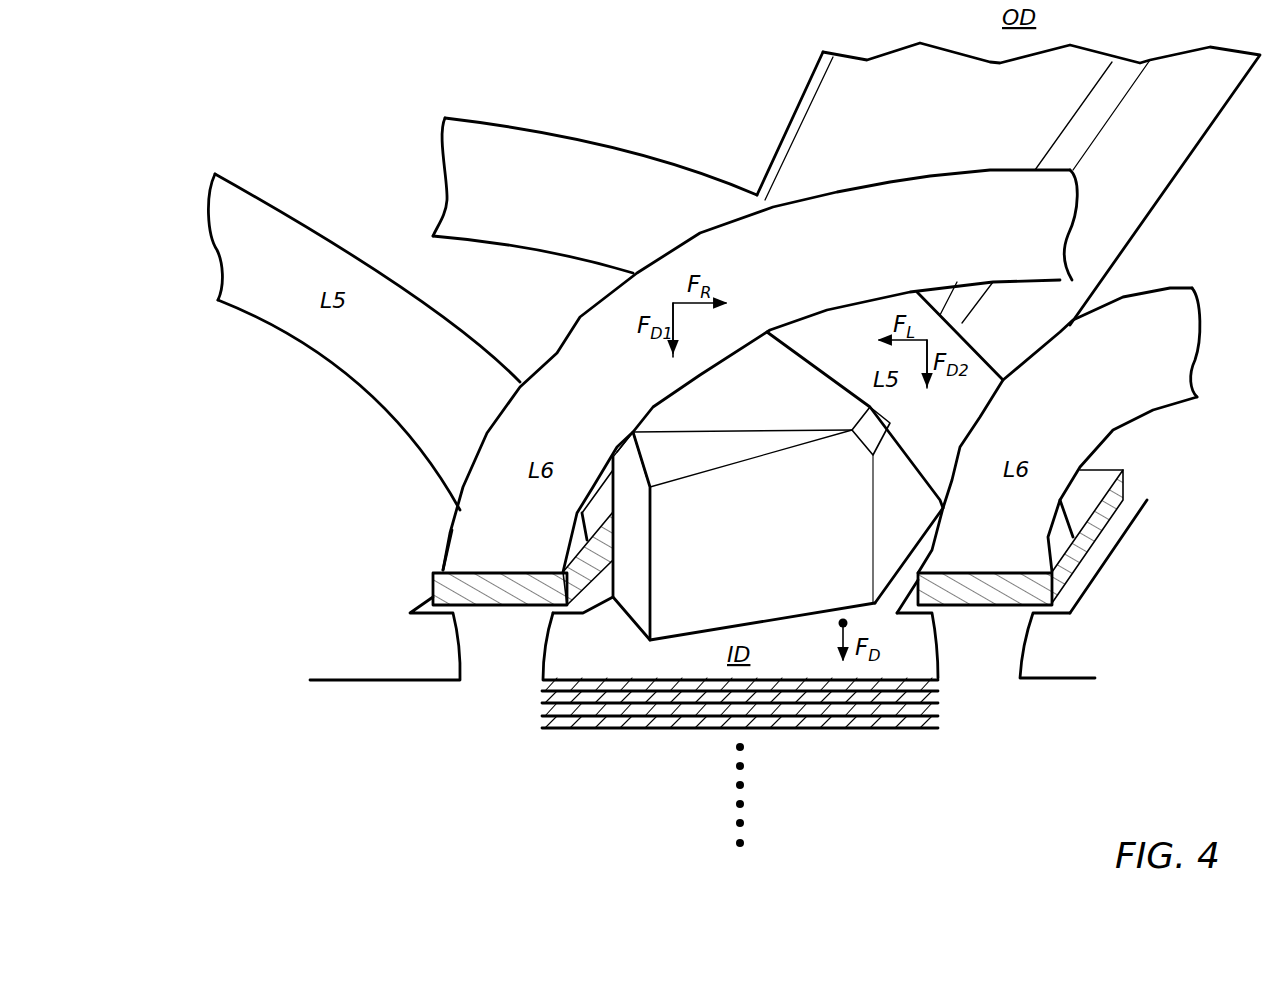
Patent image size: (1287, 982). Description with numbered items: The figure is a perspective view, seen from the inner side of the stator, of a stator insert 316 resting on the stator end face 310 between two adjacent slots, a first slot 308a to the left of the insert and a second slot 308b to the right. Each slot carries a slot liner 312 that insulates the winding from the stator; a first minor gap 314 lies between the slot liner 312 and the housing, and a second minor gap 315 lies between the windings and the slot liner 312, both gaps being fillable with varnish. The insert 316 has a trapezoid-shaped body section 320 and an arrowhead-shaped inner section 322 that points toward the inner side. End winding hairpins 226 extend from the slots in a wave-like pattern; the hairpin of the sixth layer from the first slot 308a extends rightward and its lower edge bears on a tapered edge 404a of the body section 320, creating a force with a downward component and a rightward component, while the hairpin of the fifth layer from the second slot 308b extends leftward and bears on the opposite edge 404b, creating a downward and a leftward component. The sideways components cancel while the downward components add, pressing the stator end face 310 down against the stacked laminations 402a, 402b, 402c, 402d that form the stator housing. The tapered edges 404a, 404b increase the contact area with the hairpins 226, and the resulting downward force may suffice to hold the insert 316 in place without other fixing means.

The end winding hairpins 226 is at (292, 230).
The first slot 308a is at (493, 640).
The second slot 308b is at (980, 657).
The stator end face 310 is at (743, 594).
The slot liner 312 is at (433, 573).
The first minor gap 314 is at (423, 610).
The second minor gap 315 is at (440, 560).
The stator insert 316 is at (797, 390).
The trapezoid-shaped body section 320 is at (742, 436).
The arrowhead-shaped inner section 322 is at (744, 536).
The lamination 402a is at (540, 684).
The lamination 402b is at (540, 697).
The lamination 402c is at (540, 710).
The lamination 402d is at (540, 723).
The tapered edge of body section 404a is at (633, 432).
The opposite tapered edge of body section 404b is at (873, 432).